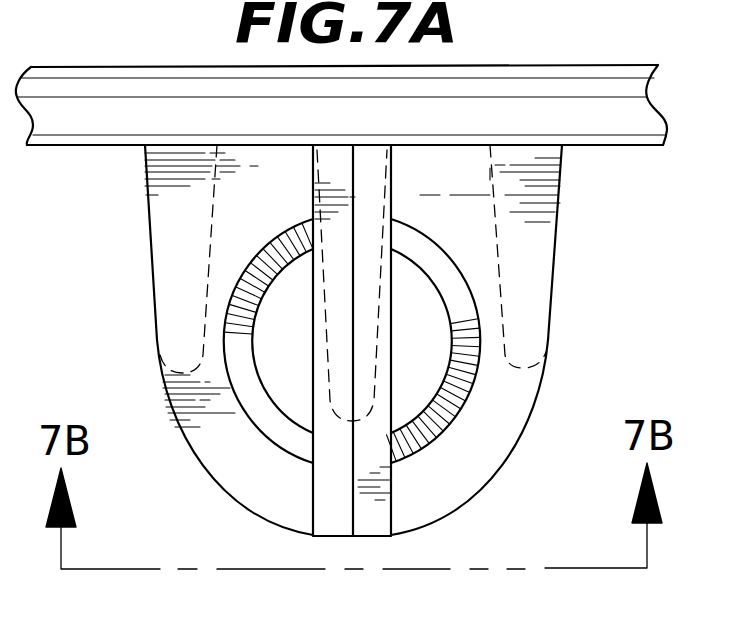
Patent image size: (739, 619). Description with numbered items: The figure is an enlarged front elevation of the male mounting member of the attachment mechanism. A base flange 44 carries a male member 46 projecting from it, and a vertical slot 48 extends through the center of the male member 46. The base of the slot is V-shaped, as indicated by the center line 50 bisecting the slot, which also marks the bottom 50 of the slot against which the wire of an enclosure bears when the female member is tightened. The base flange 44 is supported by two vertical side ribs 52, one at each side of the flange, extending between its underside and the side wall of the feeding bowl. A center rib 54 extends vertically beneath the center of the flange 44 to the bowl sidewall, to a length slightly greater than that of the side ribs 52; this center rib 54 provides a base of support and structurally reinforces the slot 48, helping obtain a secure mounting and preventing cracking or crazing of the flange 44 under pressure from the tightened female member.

The base flange 44 is at (553, 305).
The male member 46 is at (473, 390).
The vertical slot 48 is at (392, 512).
The center line 50 is at (340, 526).
The vertical side ribs 52 is at (148, 268).
The center rib 54 is at (385, 284).